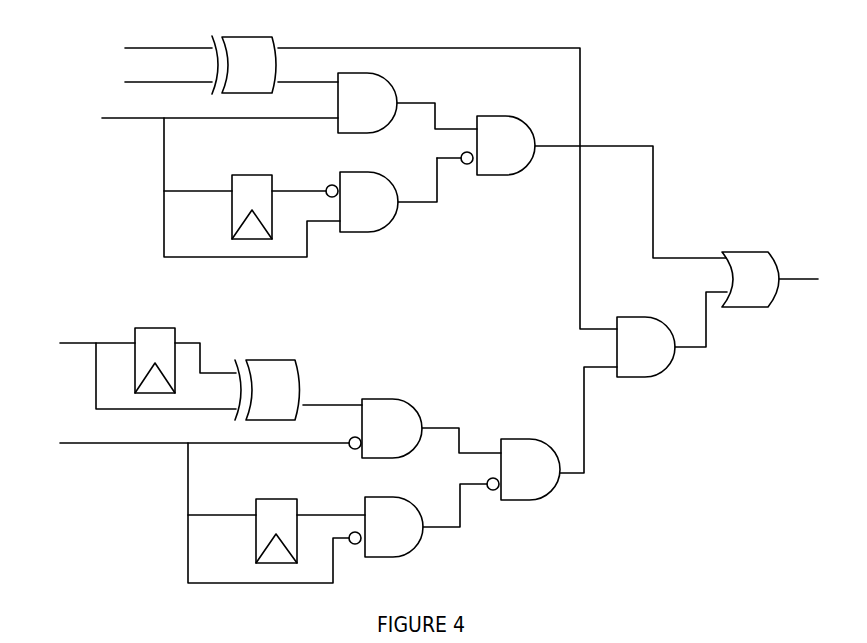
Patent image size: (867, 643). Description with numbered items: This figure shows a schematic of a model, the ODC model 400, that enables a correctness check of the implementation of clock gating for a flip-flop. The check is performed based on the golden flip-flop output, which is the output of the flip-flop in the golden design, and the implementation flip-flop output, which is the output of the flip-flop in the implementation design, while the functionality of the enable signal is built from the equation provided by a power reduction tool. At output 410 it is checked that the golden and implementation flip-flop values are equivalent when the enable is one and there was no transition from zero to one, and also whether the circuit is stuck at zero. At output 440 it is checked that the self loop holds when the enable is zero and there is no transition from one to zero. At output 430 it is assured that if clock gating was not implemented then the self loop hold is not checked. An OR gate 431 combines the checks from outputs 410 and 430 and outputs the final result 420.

The glitch detection circuit 400 is at (420, 306).
The output 410 is at (610, 147).
The final result 420 is at (790, 275).
The output 430 is at (705, 335).
The OR gate 431 is at (743, 236).
The output 440 is at (585, 418).